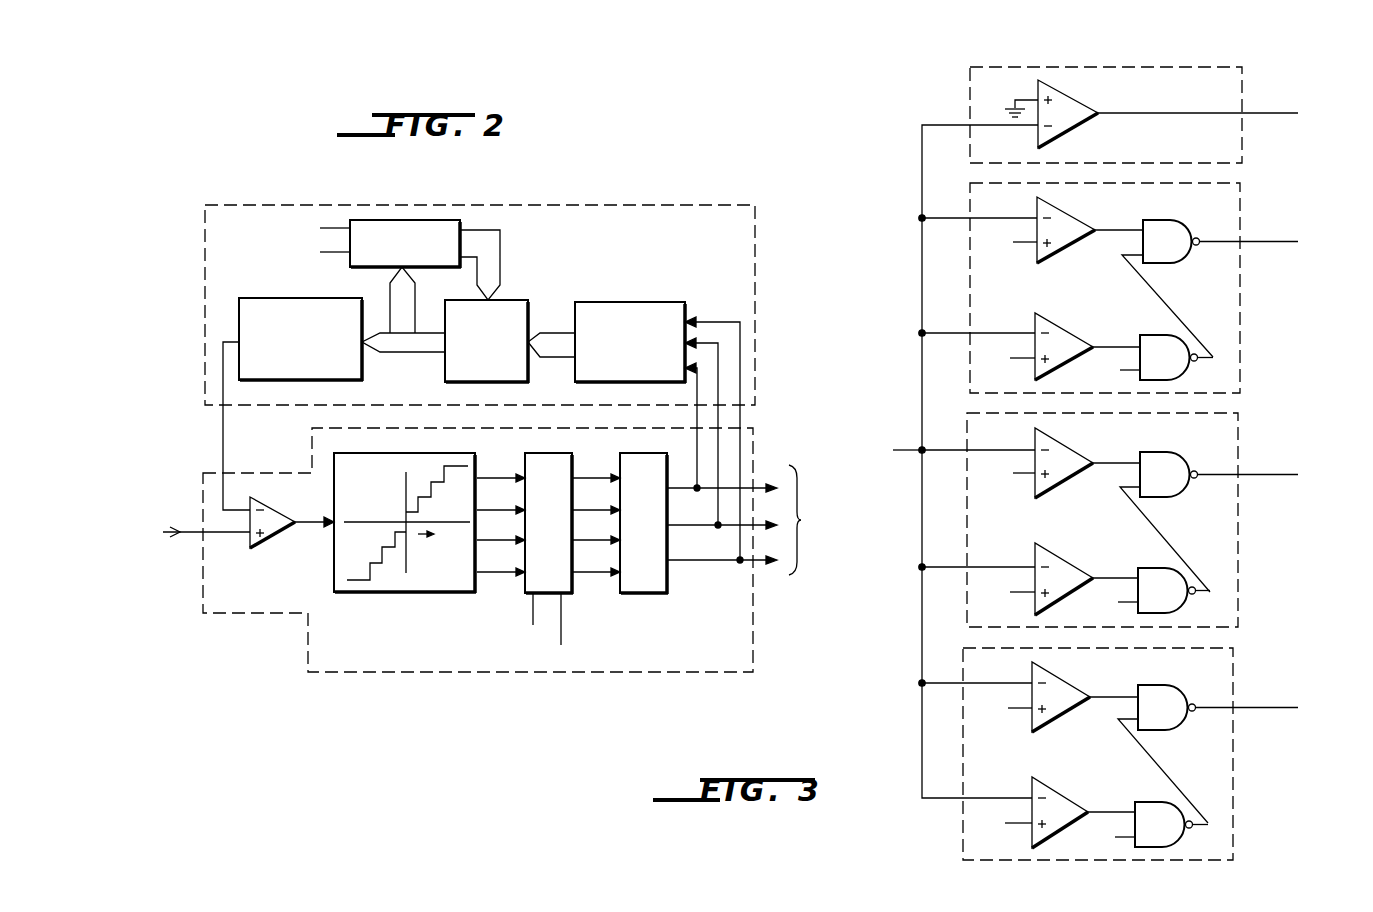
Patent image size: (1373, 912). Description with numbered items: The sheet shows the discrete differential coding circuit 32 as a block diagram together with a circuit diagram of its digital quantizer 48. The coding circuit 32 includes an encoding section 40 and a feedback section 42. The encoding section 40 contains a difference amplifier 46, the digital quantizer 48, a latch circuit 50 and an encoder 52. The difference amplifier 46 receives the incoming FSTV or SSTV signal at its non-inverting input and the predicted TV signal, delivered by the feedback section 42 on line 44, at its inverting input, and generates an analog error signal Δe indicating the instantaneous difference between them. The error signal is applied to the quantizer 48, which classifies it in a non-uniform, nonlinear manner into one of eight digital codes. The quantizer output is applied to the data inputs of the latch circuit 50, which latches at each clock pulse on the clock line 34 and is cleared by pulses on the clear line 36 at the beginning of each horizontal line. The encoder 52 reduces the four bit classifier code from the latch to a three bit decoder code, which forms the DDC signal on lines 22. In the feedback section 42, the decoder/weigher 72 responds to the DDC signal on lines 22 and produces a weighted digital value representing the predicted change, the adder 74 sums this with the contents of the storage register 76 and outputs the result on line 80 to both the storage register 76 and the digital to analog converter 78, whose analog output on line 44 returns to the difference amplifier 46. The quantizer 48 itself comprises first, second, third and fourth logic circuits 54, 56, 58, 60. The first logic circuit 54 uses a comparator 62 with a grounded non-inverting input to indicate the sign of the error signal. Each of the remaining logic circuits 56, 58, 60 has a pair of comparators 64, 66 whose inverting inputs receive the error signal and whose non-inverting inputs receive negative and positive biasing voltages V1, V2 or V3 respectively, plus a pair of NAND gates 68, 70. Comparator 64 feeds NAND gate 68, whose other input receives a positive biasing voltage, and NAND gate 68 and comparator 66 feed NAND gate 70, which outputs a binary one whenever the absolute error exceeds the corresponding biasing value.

In FIG. 2, the lines 22 is at (800, 520).
In FIG. 2, the discrete differential coding circuit 32 is at (653, 202).
In FIG. 2, the clock line 34 is at (338, 256).
In FIG. 2, the clear line 36 is at (332, 227).
In FIG. 2, the encoding section 40 is at (203, 490).
In FIG. 2, the feedback section 42 is at (202, 293).
In FIG. 2, the line 44 is at (222, 430).
In FIG. 2, the difference amplifier 46 is at (275, 548).
In FIG. 2, the digital quantizer 48 is at (373, 592).
In FIG. 3, the digital quantizer 48 is at (1302, 88).
In FIG. 2, the latch circuit 50 is at (572, 585).
In FIG. 2, the encoder 52 is at (640, 593).
In FIG. 3, the first logic circuit 54 is at (1242, 142).
In FIG. 3, the second logic circuit 56 is at (1233, 783).
In FIG. 3, the third logic circuit 58 is at (1238, 545).
In FIG. 3, the fourth logic circuit 60 is at (1240, 322).
In FIG. 3, the comparator 62 is at (1078, 101).
In FIG. 3, the comparator 64 is at (1065, 332).
In FIG. 3, the comparator 66 is at (1060, 252).
In FIG. 3, the NAND gate 68 is at (1163, 336).
In FIG. 3, the NAND gate 70 is at (1172, 263).
In FIG. 2, the decoder/weigher 72 is at (638, 275).
In FIG. 2, the adder 74 is at (524, 299).
In FIG. 2, the storage register 76 is at (433, 220).
In FIG. 2, the digital to analog converter 78 is at (257, 298).
In FIG. 2, the line 80 is at (412, 356).